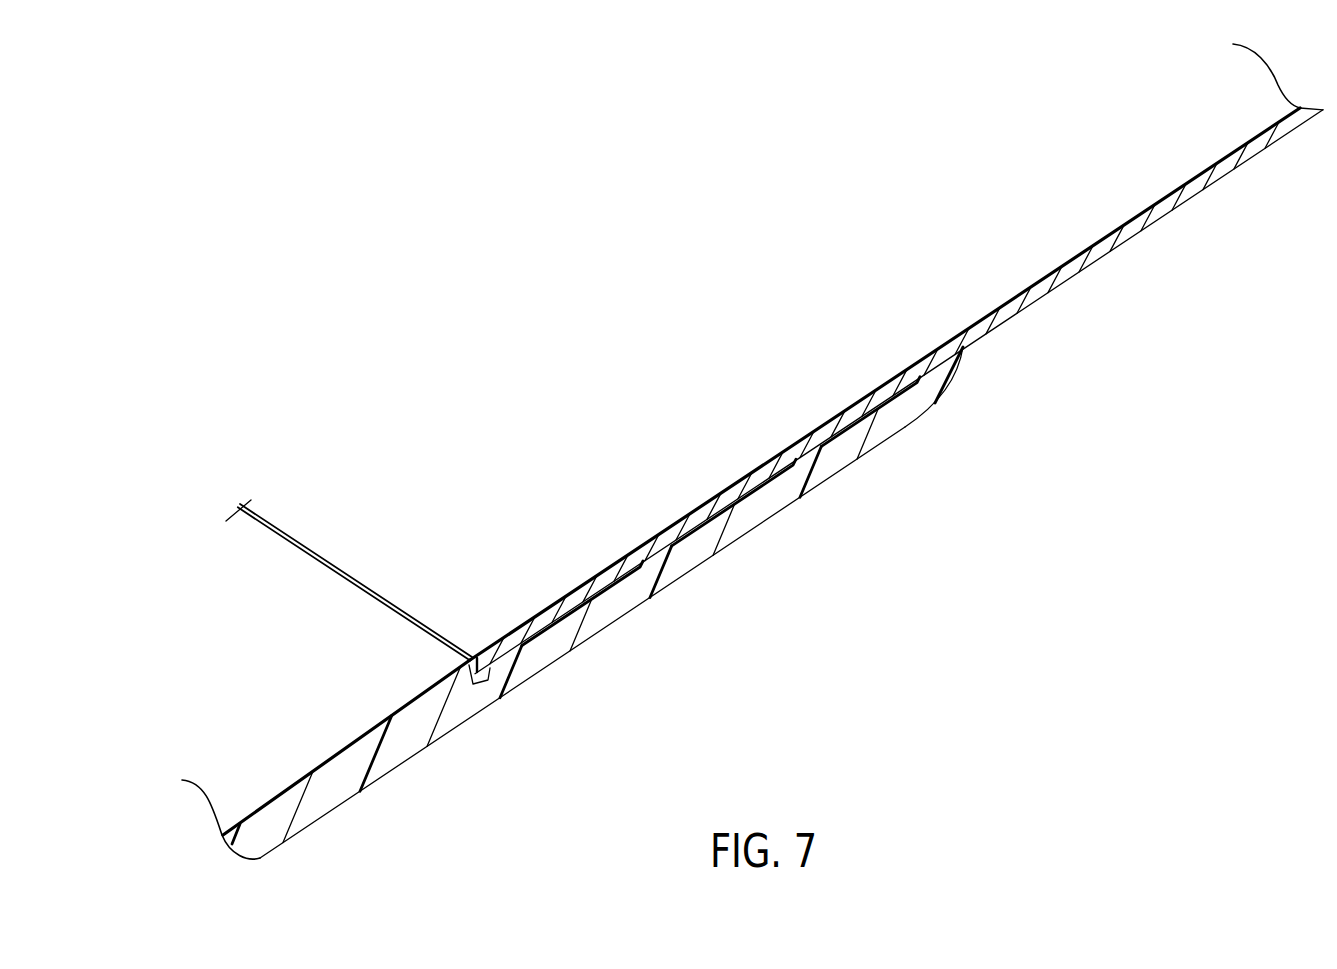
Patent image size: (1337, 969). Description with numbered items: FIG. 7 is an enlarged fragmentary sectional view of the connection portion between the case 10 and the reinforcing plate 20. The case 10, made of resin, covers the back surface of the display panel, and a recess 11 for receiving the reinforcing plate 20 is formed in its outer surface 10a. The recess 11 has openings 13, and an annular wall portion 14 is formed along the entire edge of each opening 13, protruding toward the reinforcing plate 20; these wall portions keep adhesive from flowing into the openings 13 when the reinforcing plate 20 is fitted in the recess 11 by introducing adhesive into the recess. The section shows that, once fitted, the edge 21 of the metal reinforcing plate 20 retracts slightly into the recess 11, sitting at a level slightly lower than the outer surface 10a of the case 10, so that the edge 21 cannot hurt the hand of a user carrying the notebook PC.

The case 10 is at (467, 714).
The outer surface 10a is at (263, 649).
The recess 11 is at (720, 513).
The opening 13 is at (1083, 305).
The annular wall portion 14 is at (924, 362).
The reinforcing plate 20 is at (677, 325).
The edge 21 is at (400, 620).